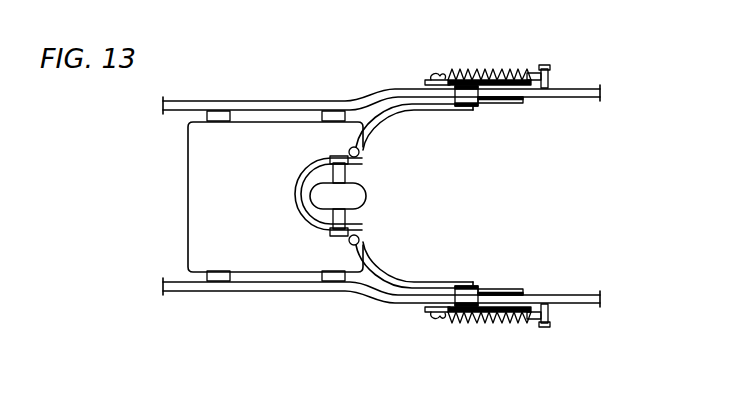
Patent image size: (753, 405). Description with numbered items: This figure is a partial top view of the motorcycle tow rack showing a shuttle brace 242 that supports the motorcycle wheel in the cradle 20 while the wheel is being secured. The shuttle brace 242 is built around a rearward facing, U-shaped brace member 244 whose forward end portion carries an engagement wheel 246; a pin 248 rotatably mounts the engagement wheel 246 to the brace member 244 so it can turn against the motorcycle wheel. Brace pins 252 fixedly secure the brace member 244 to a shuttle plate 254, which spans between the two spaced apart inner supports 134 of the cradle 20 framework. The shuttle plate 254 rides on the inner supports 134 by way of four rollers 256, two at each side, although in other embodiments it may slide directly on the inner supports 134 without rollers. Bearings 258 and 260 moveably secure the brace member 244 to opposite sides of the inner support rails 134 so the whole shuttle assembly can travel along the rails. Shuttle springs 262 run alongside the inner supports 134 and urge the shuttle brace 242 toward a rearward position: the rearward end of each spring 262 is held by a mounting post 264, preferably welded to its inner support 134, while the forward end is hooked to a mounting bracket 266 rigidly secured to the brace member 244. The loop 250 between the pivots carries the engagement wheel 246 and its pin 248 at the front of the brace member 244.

The cradle 20 is at (605, 91).
The inner supports 134 is at (380, 90).
The shuttle brace 242 is at (186, 150).
The brace member 244 is at (391, 270).
The engagement wheel 246 is at (367, 194).
The pin 248 is at (333, 236).
The loop 250 is at (297, 190).
The brace pins 252 is at (360, 118).
The shuttle plate 254 is at (189, 203).
The rollers 256 is at (323, 110).
The bearing 258 is at (462, 108).
The bearing 260 is at (512, 104).
The shuttle springs 262 is at (486, 72).
The mounting posts 264 is at (548, 65).
The mounting brackets 266 is at (437, 73).